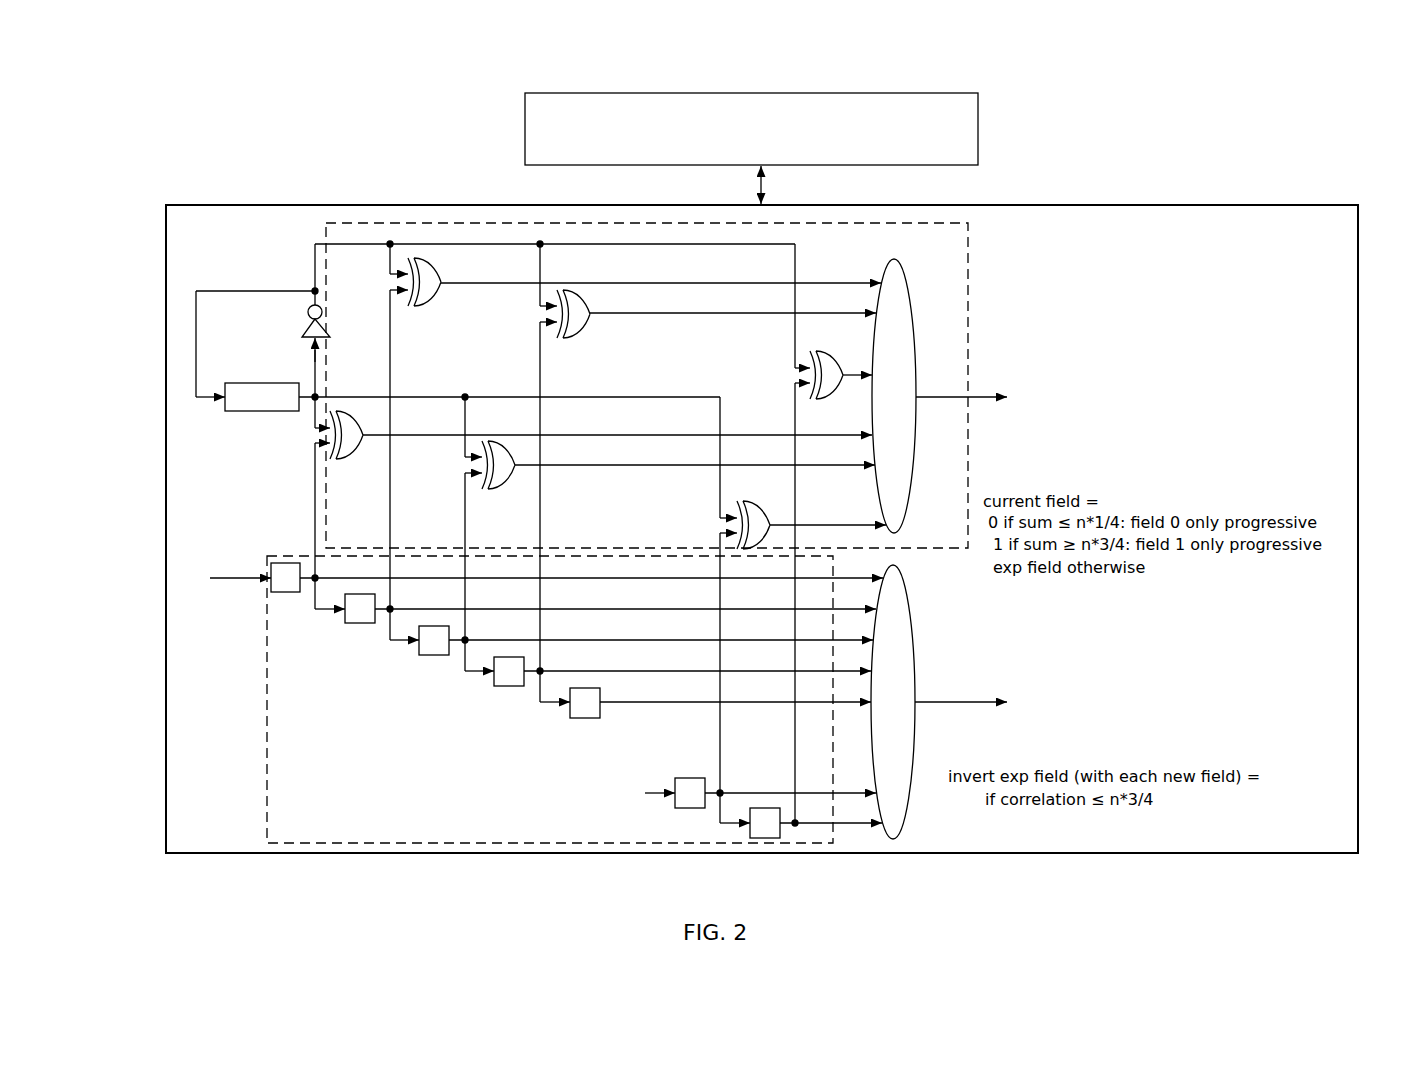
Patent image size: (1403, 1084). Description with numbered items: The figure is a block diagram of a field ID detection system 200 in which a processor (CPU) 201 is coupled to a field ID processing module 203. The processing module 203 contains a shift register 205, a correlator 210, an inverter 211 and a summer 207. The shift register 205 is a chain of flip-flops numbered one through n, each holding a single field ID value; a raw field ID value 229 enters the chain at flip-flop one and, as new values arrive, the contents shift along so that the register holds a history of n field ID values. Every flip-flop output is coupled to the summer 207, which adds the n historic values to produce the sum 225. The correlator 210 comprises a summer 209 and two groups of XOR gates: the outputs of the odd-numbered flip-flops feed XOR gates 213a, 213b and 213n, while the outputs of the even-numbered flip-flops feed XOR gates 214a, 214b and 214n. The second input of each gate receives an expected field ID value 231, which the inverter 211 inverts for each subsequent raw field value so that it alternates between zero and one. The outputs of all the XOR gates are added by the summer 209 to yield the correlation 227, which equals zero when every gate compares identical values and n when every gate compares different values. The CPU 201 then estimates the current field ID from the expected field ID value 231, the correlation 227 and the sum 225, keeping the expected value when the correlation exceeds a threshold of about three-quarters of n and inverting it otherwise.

The field ID detection system 200 is at (253, 143).
The processor (CPU) 201 is at (978, 133).
The field ID processing module 203 is at (1170, 203).
The shift register 205 is at (267, 698).
The summer 207 is at (910, 616).
The summer 209 is at (912, 296).
The correlator 210 is at (440, 222).
The inverter 211 is at (302, 330).
The XOR gate 213a is at (345, 460).
The XOR gate 213b is at (515, 480).
The XOR gate 213n is at (737, 548).
The XOR gate 214a is at (418, 308).
The XOR gate 214b is at (568, 338).
The XOR gate 214n is at (813, 352).
The sum 225 is at (1000, 686).
The correlation 227 is at (1000, 368).
The raw field ID value 229 is at (200, 550).
The expected field ID value 231 is at (245, 412).